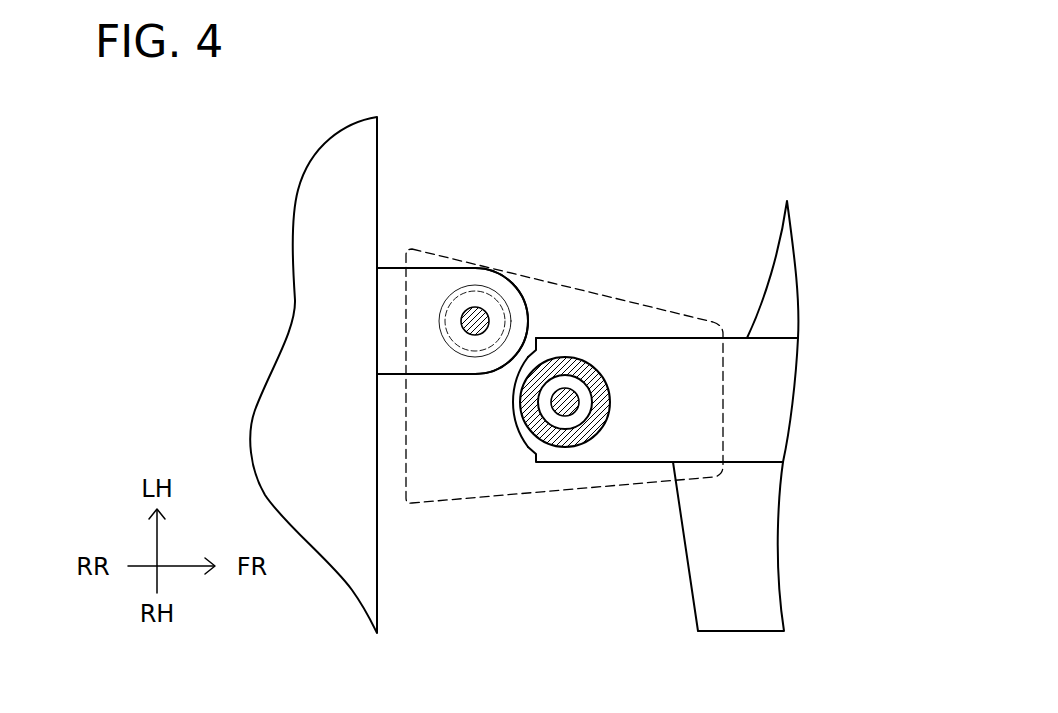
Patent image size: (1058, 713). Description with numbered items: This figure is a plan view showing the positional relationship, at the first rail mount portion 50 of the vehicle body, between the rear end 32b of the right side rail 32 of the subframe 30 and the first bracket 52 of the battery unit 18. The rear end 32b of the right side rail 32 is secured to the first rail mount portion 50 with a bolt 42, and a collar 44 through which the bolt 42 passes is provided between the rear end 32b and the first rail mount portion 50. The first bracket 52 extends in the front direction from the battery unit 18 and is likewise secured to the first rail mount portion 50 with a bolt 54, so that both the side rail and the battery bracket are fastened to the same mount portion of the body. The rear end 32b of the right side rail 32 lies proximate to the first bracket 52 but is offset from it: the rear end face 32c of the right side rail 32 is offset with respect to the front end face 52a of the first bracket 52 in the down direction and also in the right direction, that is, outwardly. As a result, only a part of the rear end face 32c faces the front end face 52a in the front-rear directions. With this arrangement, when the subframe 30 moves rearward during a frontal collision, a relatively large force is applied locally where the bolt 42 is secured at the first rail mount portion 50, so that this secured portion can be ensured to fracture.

The battery unit 18 is at (318, 258).
The subframe 30 is at (807, 247).
The right side rail 32 is at (757, 415).
The rear end 32b is at (588, 352).
The rear end face 32c is at (512, 412).
The bolt 42 is at (565, 410).
The collar 44 is at (592, 432).
The first rail mount portion 50 is at (500, 502).
The first bracket 52 is at (452, 277).
The front end face 52a is at (532, 318).
The bolt 54 is at (475, 322).